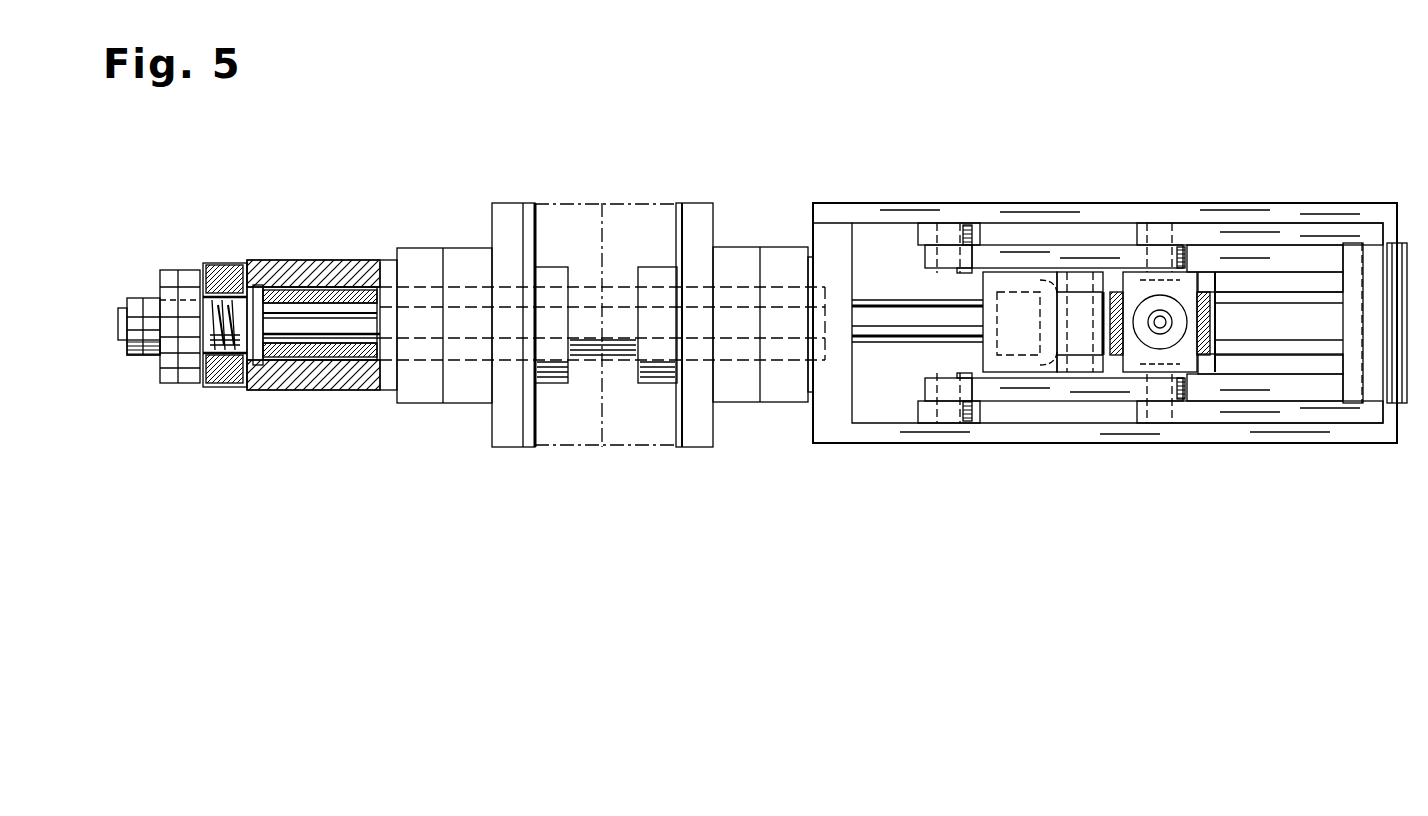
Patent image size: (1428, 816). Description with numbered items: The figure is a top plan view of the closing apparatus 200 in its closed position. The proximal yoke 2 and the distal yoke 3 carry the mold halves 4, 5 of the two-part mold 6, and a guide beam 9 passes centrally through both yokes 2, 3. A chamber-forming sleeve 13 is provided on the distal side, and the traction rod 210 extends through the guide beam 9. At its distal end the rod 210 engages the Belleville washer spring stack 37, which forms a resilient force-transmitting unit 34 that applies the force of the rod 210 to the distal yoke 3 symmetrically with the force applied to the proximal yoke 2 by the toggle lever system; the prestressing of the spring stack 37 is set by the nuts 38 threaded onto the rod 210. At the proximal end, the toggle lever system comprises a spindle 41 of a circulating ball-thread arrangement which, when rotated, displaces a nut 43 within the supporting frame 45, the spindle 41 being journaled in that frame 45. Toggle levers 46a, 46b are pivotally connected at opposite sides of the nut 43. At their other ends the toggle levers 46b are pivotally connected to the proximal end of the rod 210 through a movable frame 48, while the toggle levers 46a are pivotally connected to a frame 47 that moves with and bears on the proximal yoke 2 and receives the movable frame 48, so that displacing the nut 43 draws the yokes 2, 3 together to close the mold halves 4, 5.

The displacement measuring device 200 is at (1102, 274).
The two-part mold 6 is at (606, 270).
The mold half 5 is at (553, 233).
The mold half 4 is at (645, 232).
The distal yoke 3 is at (508, 430).
The proximal yoke 2 is at (703, 430).
The chamber-forming sleeve 13 is at (273, 270).
The guide beam 9 is at (323, 292).
The spring stack 37 is at (233, 265).
The nuts 38 is at (190, 303).
The resilient force-transmitting unit 34 is at (205, 397).
The traction rod 210 is at (323, 388).
The frame 47 is at (887, 207).
The toggle levers 46a is at (1018, 253).
The toggle levers 46b is at (1232, 237).
The supporting frame 45 is at (1110, 270).
The nut 43 is at (1188, 355).
The spindle 41 is at (1212, 320).
The movable frame 48 is at (1290, 282).